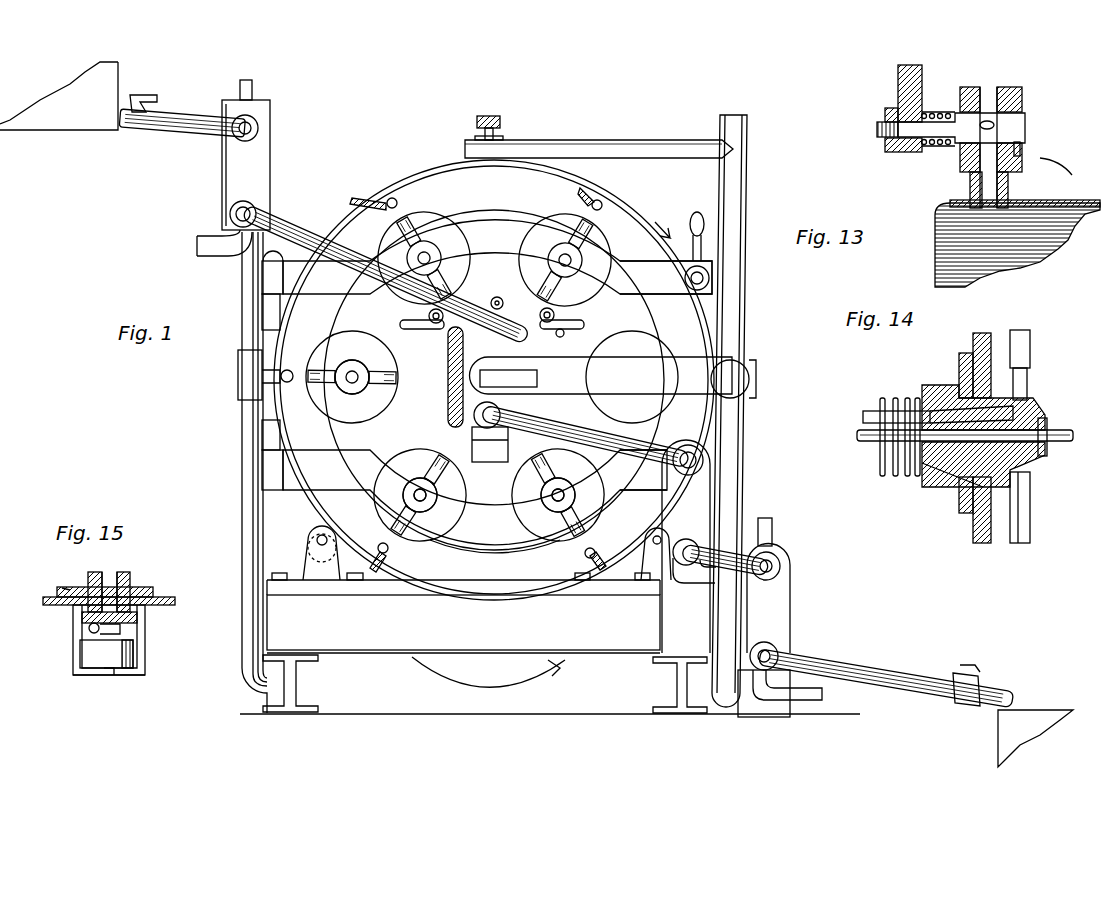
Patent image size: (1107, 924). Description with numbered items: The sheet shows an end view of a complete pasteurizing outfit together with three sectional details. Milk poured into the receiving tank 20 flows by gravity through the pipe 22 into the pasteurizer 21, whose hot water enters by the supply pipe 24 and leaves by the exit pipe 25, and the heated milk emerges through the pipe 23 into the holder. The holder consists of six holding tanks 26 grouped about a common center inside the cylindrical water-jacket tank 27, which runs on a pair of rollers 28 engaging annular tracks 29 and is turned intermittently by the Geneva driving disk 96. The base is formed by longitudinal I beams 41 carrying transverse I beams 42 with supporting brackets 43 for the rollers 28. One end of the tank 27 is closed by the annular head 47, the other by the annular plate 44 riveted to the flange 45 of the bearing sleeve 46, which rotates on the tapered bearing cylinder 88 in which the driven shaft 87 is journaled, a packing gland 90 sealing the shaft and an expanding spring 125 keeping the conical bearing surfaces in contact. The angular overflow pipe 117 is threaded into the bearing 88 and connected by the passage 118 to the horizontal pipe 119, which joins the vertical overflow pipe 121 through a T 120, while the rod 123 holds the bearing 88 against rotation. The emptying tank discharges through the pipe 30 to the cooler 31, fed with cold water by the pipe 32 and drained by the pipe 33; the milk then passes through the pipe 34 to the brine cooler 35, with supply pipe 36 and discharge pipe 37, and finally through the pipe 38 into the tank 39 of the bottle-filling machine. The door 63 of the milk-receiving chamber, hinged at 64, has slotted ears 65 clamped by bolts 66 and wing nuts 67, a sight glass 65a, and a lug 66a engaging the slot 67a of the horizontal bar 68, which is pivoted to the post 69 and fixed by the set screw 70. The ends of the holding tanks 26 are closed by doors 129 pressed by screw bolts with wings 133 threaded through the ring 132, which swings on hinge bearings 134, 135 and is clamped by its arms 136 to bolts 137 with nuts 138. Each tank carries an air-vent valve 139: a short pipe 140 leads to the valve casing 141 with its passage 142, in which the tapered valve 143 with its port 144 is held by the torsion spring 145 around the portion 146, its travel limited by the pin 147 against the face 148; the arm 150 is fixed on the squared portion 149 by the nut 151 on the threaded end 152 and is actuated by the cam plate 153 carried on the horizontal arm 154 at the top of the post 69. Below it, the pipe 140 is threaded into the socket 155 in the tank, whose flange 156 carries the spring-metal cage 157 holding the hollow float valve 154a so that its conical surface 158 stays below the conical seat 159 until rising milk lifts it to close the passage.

In FIG. 1, the receiving tank 20 is at (59, 96).
In FIG. 1, the pipe 22 is at (172, 115).
In FIG. 1, the exit pipe 25 is at (254, 86).
In FIG. 1, the pasteurizer 21 is at (266, 152).
In FIG. 1, the supply pipe 24 is at (214, 258).
In FIG. 1, the T 120 is at (238, 378).
In FIG. 1, the vertical overflow pipe 121 is at (242, 440).
In FIG. 1, the hinge bearings 135 is at (282, 318).
In FIG. 1, the hinge bearings 134 is at (286, 370).
In FIG. 1, the ring 132 is at (497, 382).
In FIG. 1, the arms 136 is at (666, 378).
In FIG. 1, the water jacket tank 27 is at (436, 172).
In FIG. 1, the annular tracks 29 is at (652, 222).
In FIG. 1, the holding tanks 26 is at (462, 212).
In FIG. 13, the holding tanks 26 is at (1017, 243).
In FIG. 15, the holding tanks 26 is at (174, 600).
In FIG. 1, the head 47 is at (495, 556).
In FIG. 1, the valve 139 is at (390, 198).
In FIG. 1, the arm 150 is at (578, 194).
In FIG. 13, the arm 150 is at (896, 72).
In FIG. 1, the doors 129 is at (440, 214).
In FIG. 1, the wings 133 is at (366, 394).
In FIG. 1, the pipe 30 is at (566, 490).
In FIG. 1, the pipe 23 is at (310, 240).
In FIG. 1, the pipe 33 is at (700, 440).
In FIG. 1, the pipe 34 is at (742, 522).
In FIG. 1, the horizontal bar 68 is at (601, 375).
In FIG. 1, the lug 66a is at (522, 376).
In FIG. 1, the set screw 70 is at (750, 379).
In FIG. 1, the sight glass 65a is at (448, 398).
In FIG. 1, the hinge 64 is at (490, 462).
In FIG. 1, the wing nuts 67 is at (428, 316).
In FIG. 1, the bolts 66 is at (436, 324).
In FIG. 1, the slotted ears 65 is at (518, 328).
In FIG. 1, the door 63 is at (572, 331).
In FIG. 1, the slot 67a is at (497, 310).
In FIG. 1, the horizontal arm 154 is at (648, 142).
In FIG. 1, the cam plate 153 is at (545, 168).
In FIG. 1, the nuts 138 is at (704, 226).
In FIG. 1, the bolts 137 is at (710, 278).
In FIG. 1, the cooler 31 is at (686, 546).
In FIG. 1, the discharge pipe 37 is at (774, 532).
In FIG. 1, the cooler 35 is at (764, 631).
In FIG. 1, the pipe 32 is at (706, 584).
In FIG. 1, the supply pipe 36 is at (822, 696).
In FIG. 1, the pipe 38 is at (896, 680).
In FIG. 1, the tank 39 is at (996, 726).
In FIG. 1, the transverse I beams 42 is at (463, 616).
In FIG. 1, the supporting brackets 43 is at (346, 584).
In FIG. 1, the rollers 28 is at (306, 540).
In FIG. 1, the longitudinal I beams 41 is at (297, 690).
In FIG. 1, the driving disk 96 is at (491, 676).
In FIG. 1, the post 69 is at (748, 330).
In FIG. 13, the nut 151 is at (884, 110).
In FIG. 13, the squared reduced portion 149 is at (888, 150).
In FIG. 13, the threaded end 152 is at (876, 130).
In FIG. 13, the tapered valve 143 is at (1005, 128).
In FIG. 13, the torsion spring 145 is at (936, 110).
In FIG. 13, the port 144 is at (956, 146).
In FIG. 13, the portion 146 is at (922, 140).
In FIG. 13, the valve casing 141 is at (1022, 104).
In FIG. 13, the passage 142 is at (988, 100).
In FIG. 13, the pin 147 is at (1020, 150).
In FIG. 13, the short pipe 140 is at (1012, 180).
In FIG. 15, the short pipe 140 is at (124, 574).
In FIG. 13, the face 148 is at (1073, 174).
In FIG. 14, the annular flange 45 is at (986, 332).
In FIG. 14, the horizontal pipe 119 is at (1022, 354).
In FIG. 14, the pipe or rod 123 is at (1022, 517).
In FIG. 14, the passage 118 is at (966, 358).
In FIG. 14, the bearing sleeve 46 is at (932, 390).
In FIG. 14, the bearing cylinder 88 is at (940, 486).
In FIG. 14, the annular plate 44 is at (958, 520).
In FIG. 14, the angular pipe 117 is at (862, 417).
In FIG. 14, the shaft 87 is at (1062, 444).
In FIG. 14, the packing gland 90 is at (1046, 416).
In FIG. 14, the expanding spring 125 is at (882, 478).
In FIG. 15, the conical valve seat 159 is at (150, 588).
In FIG. 15, the socket 155 is at (70, 588).
In FIG. 15, the flange 156 is at (138, 622).
In FIG. 15, the cage 157 is at (146, 670).
In FIG. 15, the float valve 154a is at (80, 660).
In FIG. 15, the conical contact surface 158 is at (88, 628).